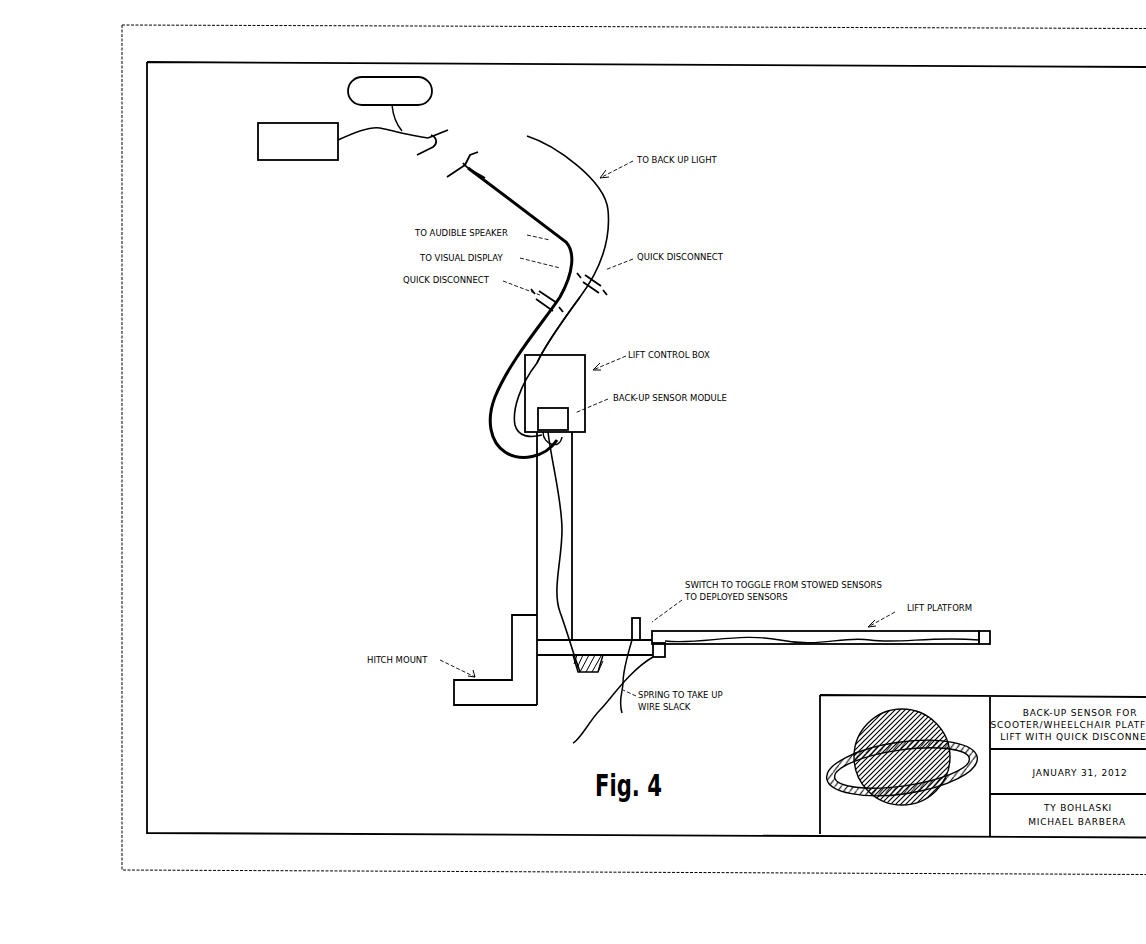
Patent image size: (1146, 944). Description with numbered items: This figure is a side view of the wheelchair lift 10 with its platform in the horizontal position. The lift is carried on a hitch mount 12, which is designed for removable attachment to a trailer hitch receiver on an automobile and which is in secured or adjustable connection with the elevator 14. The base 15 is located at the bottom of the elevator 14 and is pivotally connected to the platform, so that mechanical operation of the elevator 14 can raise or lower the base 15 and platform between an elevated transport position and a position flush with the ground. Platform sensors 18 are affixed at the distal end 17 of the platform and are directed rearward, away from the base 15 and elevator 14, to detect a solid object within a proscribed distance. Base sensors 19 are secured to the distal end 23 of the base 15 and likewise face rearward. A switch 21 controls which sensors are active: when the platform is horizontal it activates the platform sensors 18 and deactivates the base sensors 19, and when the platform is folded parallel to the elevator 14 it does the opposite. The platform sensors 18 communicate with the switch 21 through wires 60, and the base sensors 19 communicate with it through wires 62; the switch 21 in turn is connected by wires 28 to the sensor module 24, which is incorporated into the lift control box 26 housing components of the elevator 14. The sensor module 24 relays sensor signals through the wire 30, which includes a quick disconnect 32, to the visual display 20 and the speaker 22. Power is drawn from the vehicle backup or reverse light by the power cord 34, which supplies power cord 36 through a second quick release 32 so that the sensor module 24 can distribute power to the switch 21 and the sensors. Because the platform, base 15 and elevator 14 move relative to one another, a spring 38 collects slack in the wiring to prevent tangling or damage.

The wheelchair lift 10 is at (776, 178).
The hitch mount 12 is at (513, 637).
The elevator 14 is at (528, 521).
The base 15 is at (598, 638).
The distal end of the platform 17 is at (987, 630).
The platform sensors 18 is at (990, 643).
The base sensors 19 is at (667, 650).
The visual display 20 is at (432, 95).
The switch 21 is at (640, 620).
The speaker 22 is at (280, 160).
The distal end of the base 23 is at (620, 692).
The sensor module 24 is at (583, 426).
The lift control box 26 is at (587, 392).
The wires 28 is at (550, 567).
The wire 30 is at (487, 183).
The quick disconnect 32 is at (543, 302).
The power cord 34 is at (610, 210).
The power cord 36 is at (567, 320).
The springs 38 is at (590, 672).
The wires 60 is at (830, 640).
The wires 62 is at (589, 710).